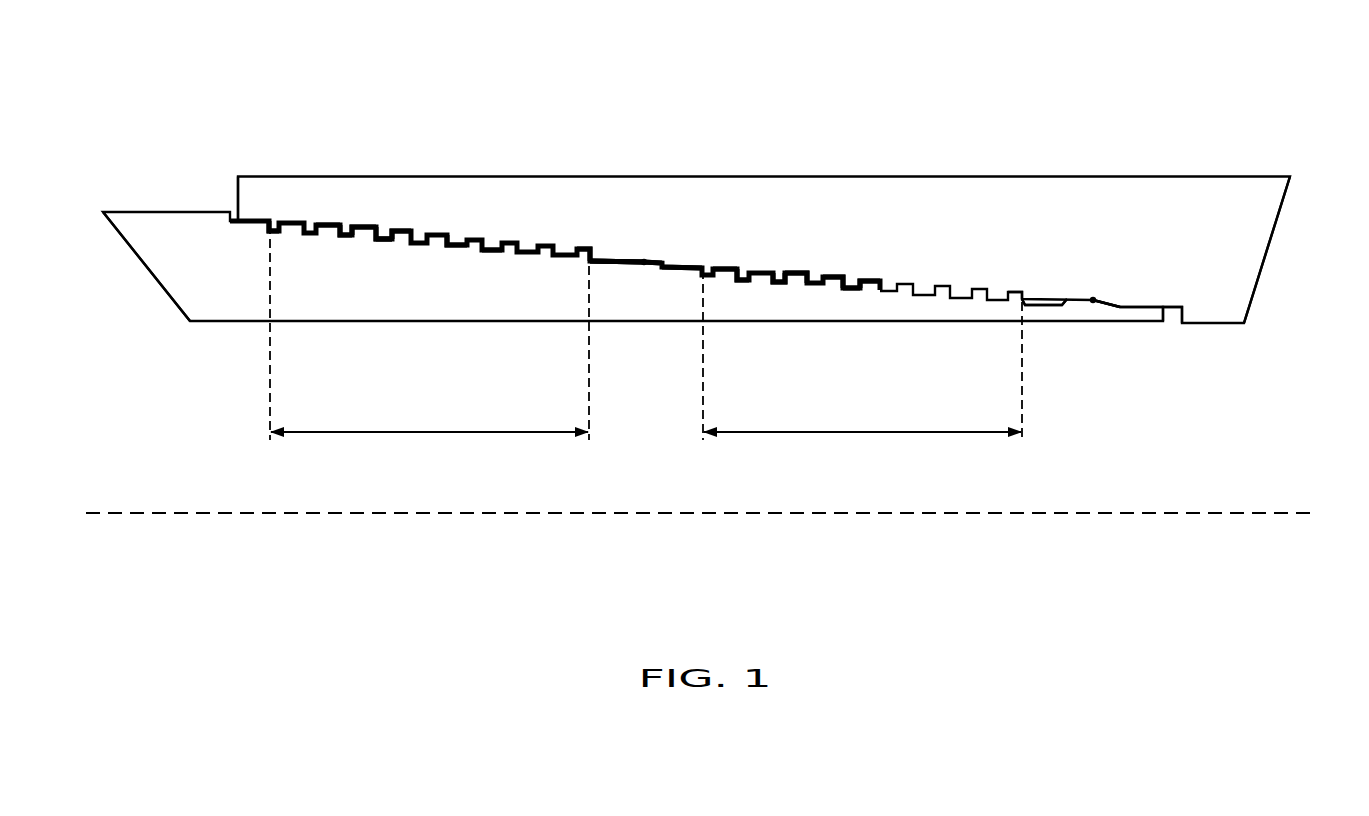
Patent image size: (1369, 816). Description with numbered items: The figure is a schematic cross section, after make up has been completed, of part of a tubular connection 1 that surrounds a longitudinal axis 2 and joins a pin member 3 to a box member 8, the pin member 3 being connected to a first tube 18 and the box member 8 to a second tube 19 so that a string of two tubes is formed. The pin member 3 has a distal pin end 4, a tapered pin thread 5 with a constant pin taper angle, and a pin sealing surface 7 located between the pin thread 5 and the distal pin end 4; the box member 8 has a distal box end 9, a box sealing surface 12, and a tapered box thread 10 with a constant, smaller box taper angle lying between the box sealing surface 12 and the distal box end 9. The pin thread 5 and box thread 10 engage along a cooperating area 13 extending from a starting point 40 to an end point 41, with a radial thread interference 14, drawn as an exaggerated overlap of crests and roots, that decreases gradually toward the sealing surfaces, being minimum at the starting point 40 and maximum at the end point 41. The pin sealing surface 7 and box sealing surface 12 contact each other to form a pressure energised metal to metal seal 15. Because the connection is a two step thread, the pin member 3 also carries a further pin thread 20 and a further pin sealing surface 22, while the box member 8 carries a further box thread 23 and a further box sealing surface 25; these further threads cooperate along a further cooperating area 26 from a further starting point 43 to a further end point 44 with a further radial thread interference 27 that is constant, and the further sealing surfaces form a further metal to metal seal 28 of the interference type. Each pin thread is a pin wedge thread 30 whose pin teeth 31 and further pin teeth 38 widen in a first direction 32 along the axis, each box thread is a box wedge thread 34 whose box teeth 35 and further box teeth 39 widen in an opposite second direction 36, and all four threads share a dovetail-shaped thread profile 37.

The tubular connection 1 is at (1260, 74).
The longitudinal axis 2 is at (232, 517).
The pin member 3 is at (481, 326).
The distal pin end 4 is at (1166, 325).
The pin thread 5 is at (804, 273).
The pin sealing surface 7 is at (1100, 297).
The box member 8 is at (976, 139).
The distal box end 9 is at (242, 174).
The box thread 10 is at (744, 286).
The box sealing surface 12 is at (1069, 308).
The cooperating area 13 is at (865, 437).
The radial thread interference 14 is at (846, 276).
The metal to metal seal 15 is at (1097, 311).
The first tube 18 is at (133, 268).
The second tube 19 is at (1270, 268).
The further pin thread 20 is at (406, 221).
The further pin sealing surface 22 is at (651, 258).
The further box thread 23 is at (495, 259).
The further box sealing surface 25 is at (623, 269).
The further cooperating area 26 is at (433, 437).
The further radial thread interference 27 is at (474, 228).
The further metal to metal seal 28 is at (649, 271).
The pin wedge thread 30 is at (378, 218).
The pin teeth 31 is at (757, 268).
The first direction 32 is at (1090, 65).
The box wedge thread 34 is at (402, 248).
The box teeth 35 is at (848, 296).
The second direction 36 is at (1150, 585).
The dovetail-shaped thread profile 37 is at (327, 225).
The further pin teeth 38 is at (362, 222).
The further box teeth 39 is at (385, 246).
The starting point 40 is at (1019, 289).
The end point 41 is at (697, 262).
The further starting point 43 is at (584, 247).
The further end point 44 is at (270, 216).